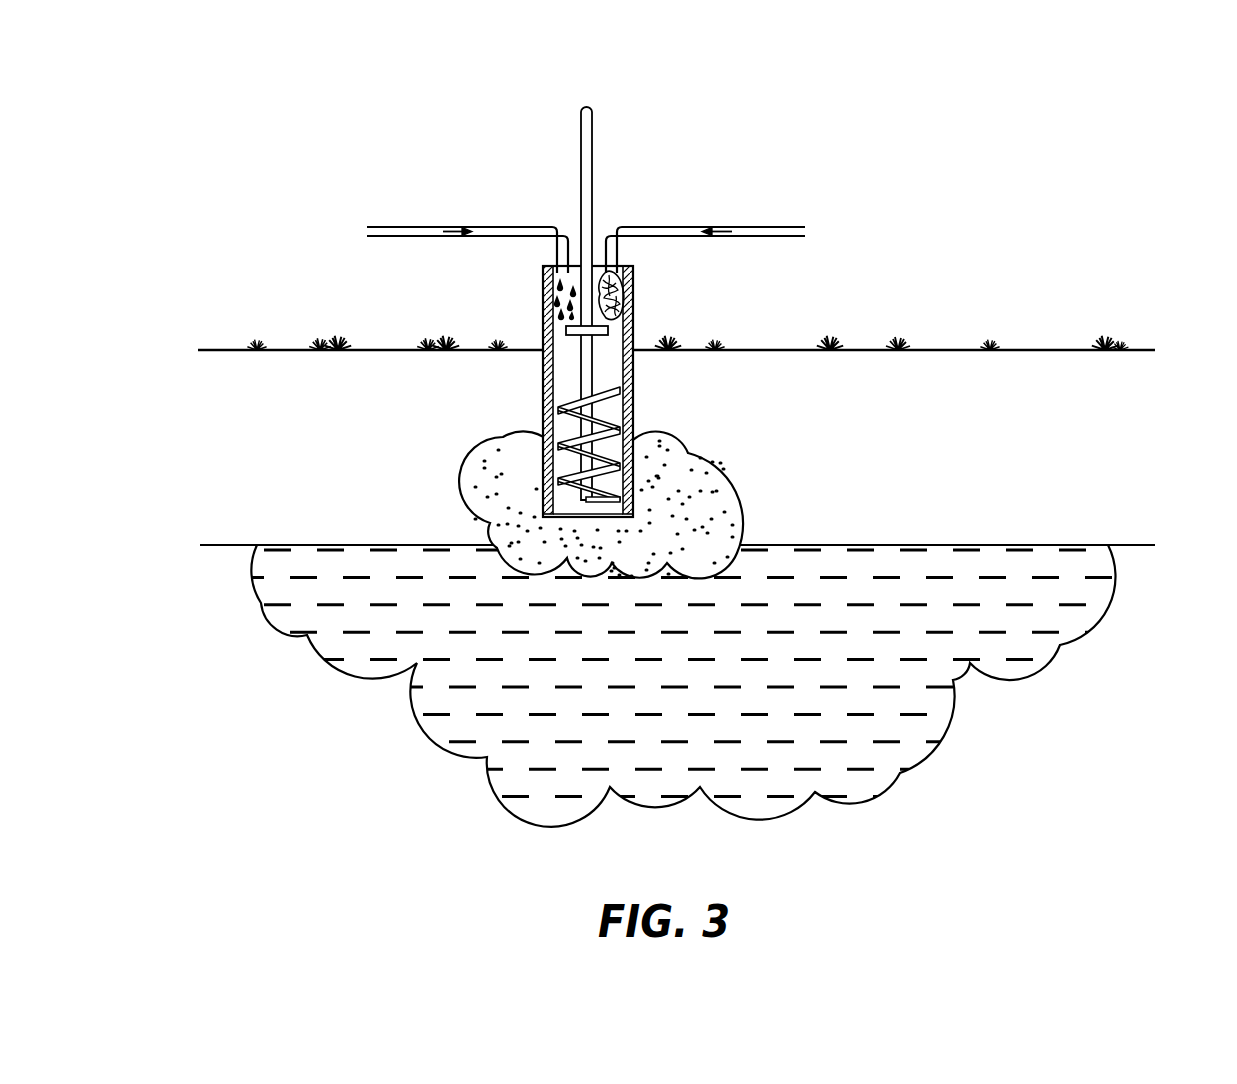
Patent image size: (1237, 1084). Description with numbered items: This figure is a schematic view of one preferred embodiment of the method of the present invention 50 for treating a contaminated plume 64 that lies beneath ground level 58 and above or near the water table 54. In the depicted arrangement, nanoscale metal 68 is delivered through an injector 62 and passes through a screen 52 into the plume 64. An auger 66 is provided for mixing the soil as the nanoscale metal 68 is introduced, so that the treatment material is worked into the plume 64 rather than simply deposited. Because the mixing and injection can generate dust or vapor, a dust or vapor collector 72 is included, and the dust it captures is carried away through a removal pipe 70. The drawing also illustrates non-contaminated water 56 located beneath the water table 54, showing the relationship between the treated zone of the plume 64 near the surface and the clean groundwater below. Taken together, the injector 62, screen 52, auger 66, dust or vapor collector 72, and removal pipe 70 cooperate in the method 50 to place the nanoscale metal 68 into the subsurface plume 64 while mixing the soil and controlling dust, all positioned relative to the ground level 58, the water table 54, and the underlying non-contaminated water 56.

The method of the present invention 50 is at (1140, 140).
The screen 52 is at (543, 414).
The water table 54 is at (223, 543).
The non-contaminated water 56 is at (942, 725).
The ground level 58 is at (222, 348).
The injector 62 is at (408, 230).
The plume 64 is at (735, 507).
The auger 66 is at (600, 394).
The nanoscale metal 68 is at (543, 293).
The removal pipe 70 is at (767, 228).
The dust or vapor collector 72 is at (633, 294).